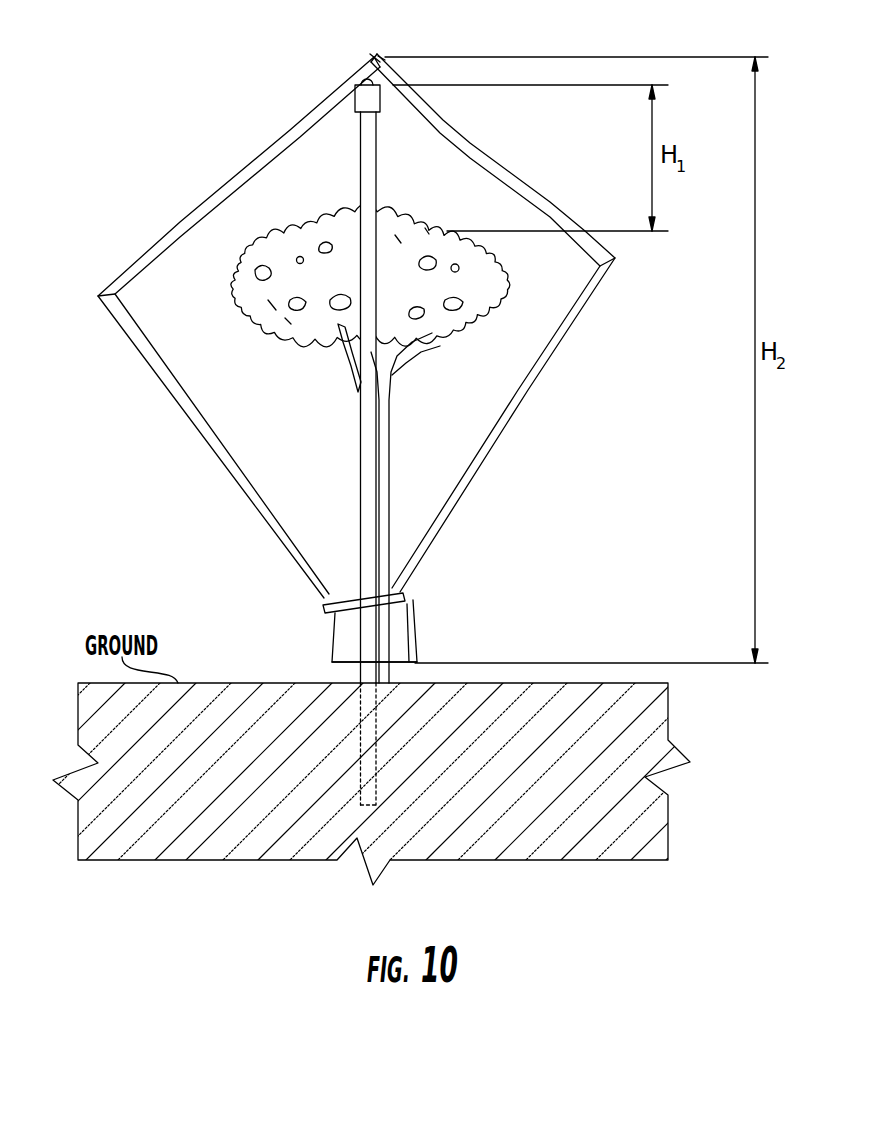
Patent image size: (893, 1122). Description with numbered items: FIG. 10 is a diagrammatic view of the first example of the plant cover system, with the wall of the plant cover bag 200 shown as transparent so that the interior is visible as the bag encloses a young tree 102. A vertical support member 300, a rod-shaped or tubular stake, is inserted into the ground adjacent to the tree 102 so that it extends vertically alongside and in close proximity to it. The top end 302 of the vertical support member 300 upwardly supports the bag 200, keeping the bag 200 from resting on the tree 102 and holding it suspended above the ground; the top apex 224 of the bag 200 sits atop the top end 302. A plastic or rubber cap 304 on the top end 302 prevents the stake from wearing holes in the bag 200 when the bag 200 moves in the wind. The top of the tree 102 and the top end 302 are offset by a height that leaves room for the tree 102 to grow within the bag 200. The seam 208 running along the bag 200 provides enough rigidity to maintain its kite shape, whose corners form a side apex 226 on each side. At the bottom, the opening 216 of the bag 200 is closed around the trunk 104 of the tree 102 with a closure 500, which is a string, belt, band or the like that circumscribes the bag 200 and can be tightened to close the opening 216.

The plant cover bag 200 is at (177, 130).
The top apex 224 is at (370, 56).
The top end 302 is at (385, 58).
The cap 304 is at (355, 96).
The vertical support member 300 is at (360, 200).
The side apex 226 is at (98, 297).
The seam 208 is at (565, 338).
The tree 102 is at (445, 390).
The trunk 104 is at (396, 520).
The closure 500 is at (322, 606).
The opening 216 is at (411, 659).